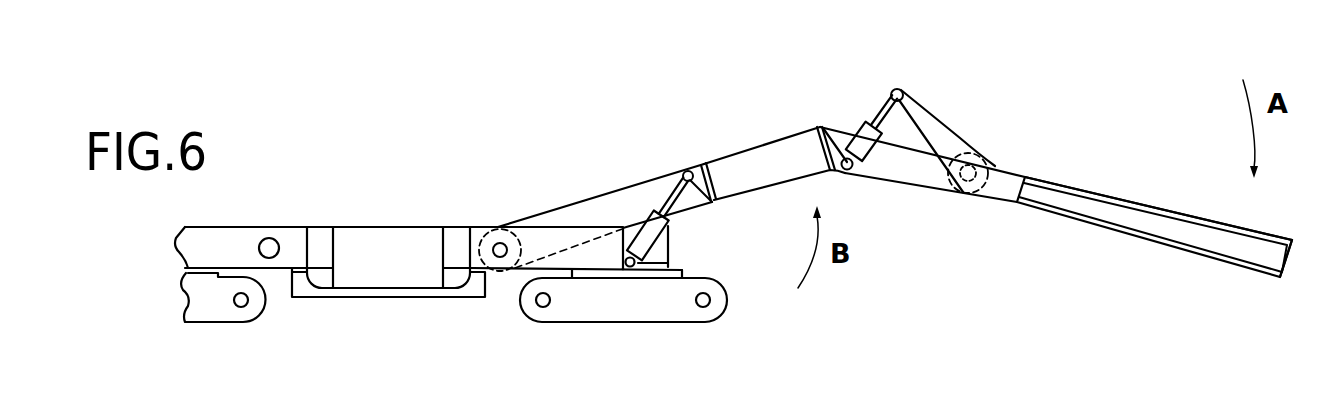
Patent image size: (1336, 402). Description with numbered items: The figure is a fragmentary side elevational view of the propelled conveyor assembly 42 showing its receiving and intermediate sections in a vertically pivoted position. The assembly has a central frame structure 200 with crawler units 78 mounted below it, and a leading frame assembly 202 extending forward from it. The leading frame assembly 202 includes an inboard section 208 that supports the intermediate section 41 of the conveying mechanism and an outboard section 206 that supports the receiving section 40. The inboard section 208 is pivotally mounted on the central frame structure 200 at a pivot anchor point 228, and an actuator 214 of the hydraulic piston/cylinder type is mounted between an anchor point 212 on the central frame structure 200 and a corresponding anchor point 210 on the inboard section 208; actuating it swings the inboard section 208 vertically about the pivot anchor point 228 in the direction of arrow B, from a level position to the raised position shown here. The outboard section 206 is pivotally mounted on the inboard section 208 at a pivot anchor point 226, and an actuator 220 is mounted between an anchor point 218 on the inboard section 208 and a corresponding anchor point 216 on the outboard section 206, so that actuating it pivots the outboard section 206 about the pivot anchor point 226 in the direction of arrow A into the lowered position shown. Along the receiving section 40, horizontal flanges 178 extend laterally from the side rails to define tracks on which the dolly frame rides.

The receiving section 40 is at (1185, 210).
The intermediate section 41 is at (743, 151).
The propelled conveyor assembly 42 is at (1006, 108).
The crawler units 78 is at (568, 323).
The horizontal flanges 178 is at (1262, 227).
The central frame structure 200 is at (373, 218).
The leading frame assembly 202 is at (933, 200).
The outboard section 206 is at (1102, 187).
The inboard section 208 is at (706, 158).
The anchor point 210 is at (686, 176).
The anchor point 212 is at (672, 262).
The actuator 214 is at (668, 222).
The anchor point 216 is at (895, 88).
The anchor point 218 is at (847, 172).
The actuator 220 is at (863, 110).
The pivot anchor point 226 is at (963, 185).
The pivot anchor point 228 is at (500, 243).